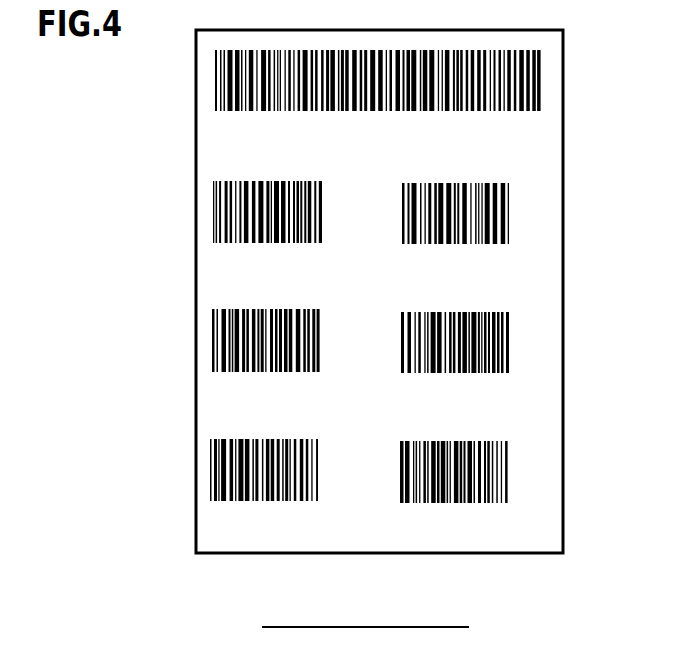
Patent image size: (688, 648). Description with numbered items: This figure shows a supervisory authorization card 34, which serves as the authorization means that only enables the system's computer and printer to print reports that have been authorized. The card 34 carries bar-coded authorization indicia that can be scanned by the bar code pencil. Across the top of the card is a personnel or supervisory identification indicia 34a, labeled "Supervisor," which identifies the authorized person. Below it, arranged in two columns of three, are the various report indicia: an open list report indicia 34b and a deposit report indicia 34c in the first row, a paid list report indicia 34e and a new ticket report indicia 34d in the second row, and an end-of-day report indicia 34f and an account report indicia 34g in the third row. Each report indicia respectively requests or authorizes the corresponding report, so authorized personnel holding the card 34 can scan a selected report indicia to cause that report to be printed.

The supervisory authorization card 34 is at (300, 562).
The supervisory identification indicia 34a is at (213, 81).
The open list report indicia 34b is at (212, 211).
The deposit report indicia 34c is at (511, 219).
The new ticket report indicia 34d is at (511, 354).
The paid list report indicia 34e is at (211, 354).
The end-of-day report indicia 34f is at (209, 490).
The account report indicia 34g is at (510, 484).